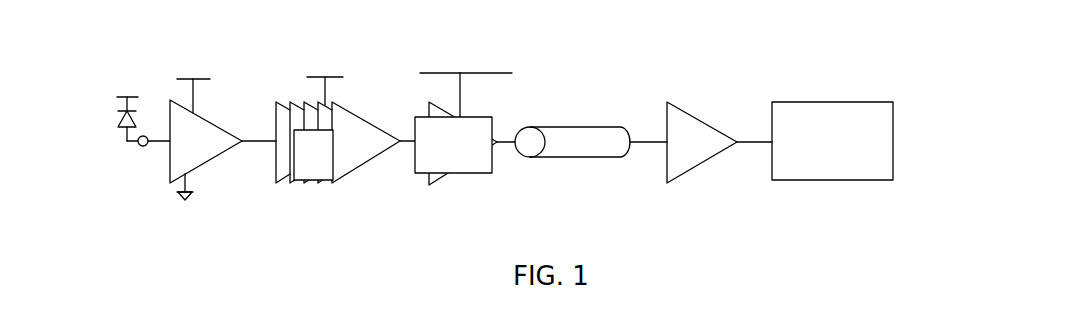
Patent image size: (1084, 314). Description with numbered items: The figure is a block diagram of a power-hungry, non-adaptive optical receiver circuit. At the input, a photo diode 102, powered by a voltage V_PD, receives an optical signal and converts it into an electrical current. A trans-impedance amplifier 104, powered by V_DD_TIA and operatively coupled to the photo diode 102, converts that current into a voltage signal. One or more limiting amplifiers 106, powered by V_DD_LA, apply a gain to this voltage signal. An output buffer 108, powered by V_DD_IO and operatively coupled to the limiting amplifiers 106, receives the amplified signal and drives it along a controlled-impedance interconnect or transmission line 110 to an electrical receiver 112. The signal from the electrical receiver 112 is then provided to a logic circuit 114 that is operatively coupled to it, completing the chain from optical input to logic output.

The photo diode 102 is at (118, 130).
The trans-impedance amplifier 104 is at (210, 160).
The limiting amplifier 106 is at (373, 117).
The output buffer 108 is at (497, 145).
The transmission line 110 is at (585, 158).
The electrical receiver 112 is at (700, 167).
The logic circuit 114 is at (825, 180).